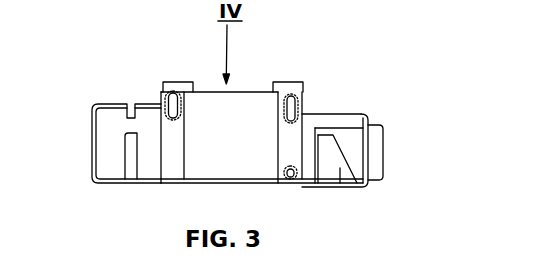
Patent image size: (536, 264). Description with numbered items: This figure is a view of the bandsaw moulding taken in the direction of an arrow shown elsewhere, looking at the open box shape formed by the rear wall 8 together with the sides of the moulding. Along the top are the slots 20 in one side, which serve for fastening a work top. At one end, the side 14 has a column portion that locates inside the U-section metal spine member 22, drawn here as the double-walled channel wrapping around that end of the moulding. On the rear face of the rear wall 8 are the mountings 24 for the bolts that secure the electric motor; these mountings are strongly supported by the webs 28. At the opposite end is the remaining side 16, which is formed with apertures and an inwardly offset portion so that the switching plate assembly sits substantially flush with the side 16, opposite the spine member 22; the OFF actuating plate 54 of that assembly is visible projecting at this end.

The rear wall 8 is at (147, 106).
The side 14 is at (124, 143).
The side 16 is at (368, 117).
The slots 20 is at (172, 90).
The U-section metal spine member 22 is at (102, 103).
The mountings 24 is at (189, 82).
The webs 28 is at (303, 86).
The OFF actuating plate 54 is at (377, 153).